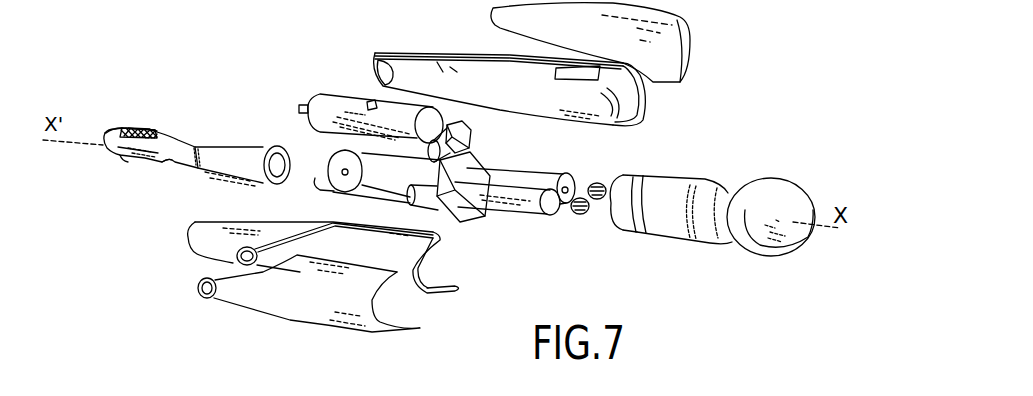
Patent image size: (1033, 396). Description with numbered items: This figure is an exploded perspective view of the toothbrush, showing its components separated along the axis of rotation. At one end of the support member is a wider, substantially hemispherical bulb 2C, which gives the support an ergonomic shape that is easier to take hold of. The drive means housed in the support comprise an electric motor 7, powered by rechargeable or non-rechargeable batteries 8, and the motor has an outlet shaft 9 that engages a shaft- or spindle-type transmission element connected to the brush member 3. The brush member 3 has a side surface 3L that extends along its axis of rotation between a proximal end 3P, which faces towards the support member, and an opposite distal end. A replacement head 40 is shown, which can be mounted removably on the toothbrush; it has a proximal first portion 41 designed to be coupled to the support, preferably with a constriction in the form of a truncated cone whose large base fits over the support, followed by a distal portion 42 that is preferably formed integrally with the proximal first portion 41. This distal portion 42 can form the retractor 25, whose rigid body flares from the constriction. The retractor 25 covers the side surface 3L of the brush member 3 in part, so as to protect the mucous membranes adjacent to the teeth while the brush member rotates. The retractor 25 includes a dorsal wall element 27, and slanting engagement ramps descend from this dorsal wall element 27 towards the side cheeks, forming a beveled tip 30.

The bulb 2C is at (697, 247).
The brush member 3 is at (138, 165).
The side surface 3L is at (124, 164).
The proximal end 3P is at (169, 168).
The electric motor 7 is at (340, 100).
The batteries 8 is at (547, 170).
The outlet shaft 9 is at (302, 104).
The retractor 25 is at (150, 130).
The dorsal wall element 27 is at (128, 127).
The beveled tip 30 is at (102, 130).
The replacement head 40 is at (210, 138).
The proximal first portion 41 is at (242, 140).
The distal portion 42 is at (140, 110).